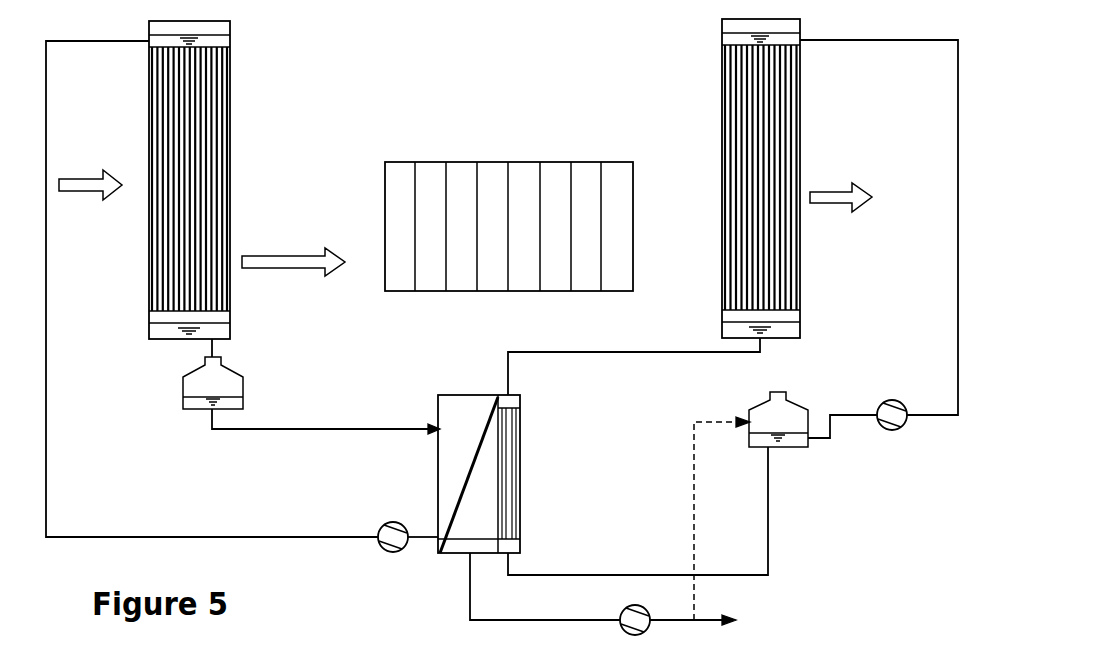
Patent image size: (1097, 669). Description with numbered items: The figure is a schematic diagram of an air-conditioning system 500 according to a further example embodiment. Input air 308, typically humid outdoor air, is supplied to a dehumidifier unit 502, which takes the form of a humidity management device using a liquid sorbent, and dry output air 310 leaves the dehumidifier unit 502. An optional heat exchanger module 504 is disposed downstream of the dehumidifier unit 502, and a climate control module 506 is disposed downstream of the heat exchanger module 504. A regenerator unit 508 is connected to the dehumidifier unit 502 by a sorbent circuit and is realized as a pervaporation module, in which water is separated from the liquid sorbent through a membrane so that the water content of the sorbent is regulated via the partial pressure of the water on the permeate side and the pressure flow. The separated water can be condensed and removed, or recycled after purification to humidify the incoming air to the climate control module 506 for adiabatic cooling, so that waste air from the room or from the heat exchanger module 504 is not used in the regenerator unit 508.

The air-conditioning system 500 is at (553, 78).
The dehumidifier unit 502 is at (215, 87).
The heat exchanger module 504 is at (464, 173).
The climate control module 506 is at (785, 110).
The regenerator unit 508 is at (438, 480).
The input air 308 is at (83, 182).
The output air 310 is at (285, 262).